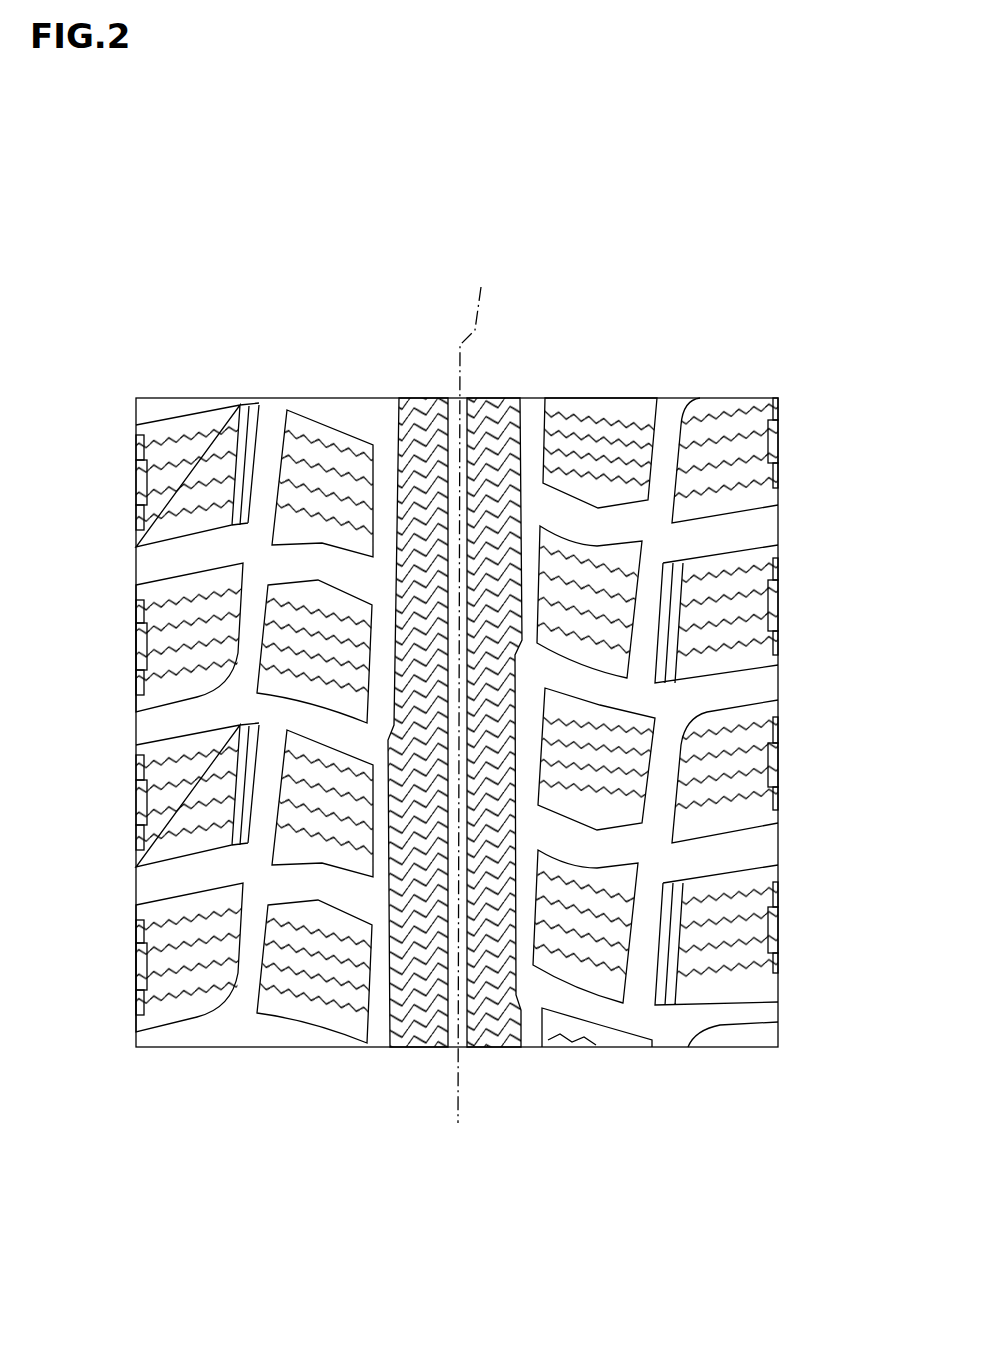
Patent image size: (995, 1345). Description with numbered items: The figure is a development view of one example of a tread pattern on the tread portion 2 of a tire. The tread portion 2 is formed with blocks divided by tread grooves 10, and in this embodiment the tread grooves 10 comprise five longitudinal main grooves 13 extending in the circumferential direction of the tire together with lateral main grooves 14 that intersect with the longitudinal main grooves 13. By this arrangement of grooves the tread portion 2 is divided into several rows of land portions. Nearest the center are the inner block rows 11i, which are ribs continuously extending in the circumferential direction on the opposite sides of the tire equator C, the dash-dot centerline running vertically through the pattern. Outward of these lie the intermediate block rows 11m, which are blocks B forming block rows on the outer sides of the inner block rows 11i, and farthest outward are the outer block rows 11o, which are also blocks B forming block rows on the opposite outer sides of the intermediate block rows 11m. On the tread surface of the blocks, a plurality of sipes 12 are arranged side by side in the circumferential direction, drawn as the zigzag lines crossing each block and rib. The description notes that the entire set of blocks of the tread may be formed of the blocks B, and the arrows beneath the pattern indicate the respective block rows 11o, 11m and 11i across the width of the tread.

The tread portion 2 is at (752, 350).
The tread grooves 10 is at (668, 430).
The sipes 12 is at (619, 756).
The longitudinal main grooves 13 is at (462, 724).
The lateral main grooves 14 is at (160, 565).
The blocks B is at (727, 985).
The tire equator C is at (475, 692).
The outer block rows 11o is at (188, 1096).
The intermediate block rows 11m is at (308, 1096).
The inner block rows 11i is at (425, 1096).